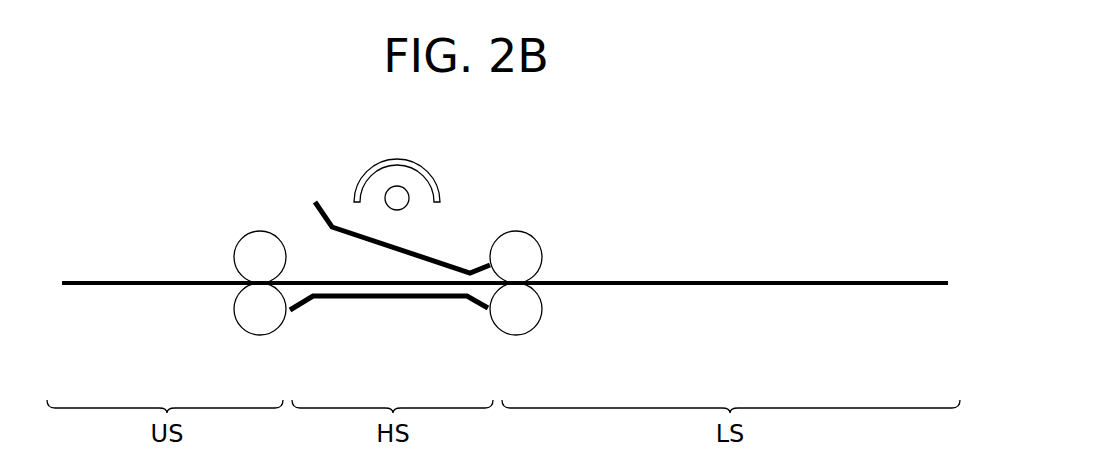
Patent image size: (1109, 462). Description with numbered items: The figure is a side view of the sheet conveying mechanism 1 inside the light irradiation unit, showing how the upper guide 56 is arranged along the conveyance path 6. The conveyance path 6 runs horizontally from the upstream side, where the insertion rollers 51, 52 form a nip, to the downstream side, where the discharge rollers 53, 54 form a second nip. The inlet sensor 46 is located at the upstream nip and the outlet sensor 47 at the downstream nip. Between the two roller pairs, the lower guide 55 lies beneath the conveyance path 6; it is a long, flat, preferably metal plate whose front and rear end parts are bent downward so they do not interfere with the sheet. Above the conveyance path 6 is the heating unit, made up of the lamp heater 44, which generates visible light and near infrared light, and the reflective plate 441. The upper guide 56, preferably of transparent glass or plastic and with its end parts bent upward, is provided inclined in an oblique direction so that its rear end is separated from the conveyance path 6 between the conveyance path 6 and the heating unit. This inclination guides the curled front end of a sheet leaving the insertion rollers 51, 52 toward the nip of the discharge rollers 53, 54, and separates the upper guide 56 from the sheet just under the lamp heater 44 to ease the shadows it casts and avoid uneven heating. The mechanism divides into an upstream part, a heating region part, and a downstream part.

The sheet conveying apparatus 1 is at (208, 185).
The conveyance path 6 is at (875, 281).
The lamp heater 44 is at (400, 186).
The reflective plate 441 is at (440, 185).
The inlet sensor 46 is at (217, 291).
The outlet sensor 47 is at (558, 291).
The insertion roller 51 is at (270, 335).
The insertion roller 52 is at (258, 230).
The discharge roller 53 is at (525, 337).
The discharge roller 54 is at (538, 239).
The lower guide 55 is at (416, 304).
The upper guide 56 is at (328, 208).